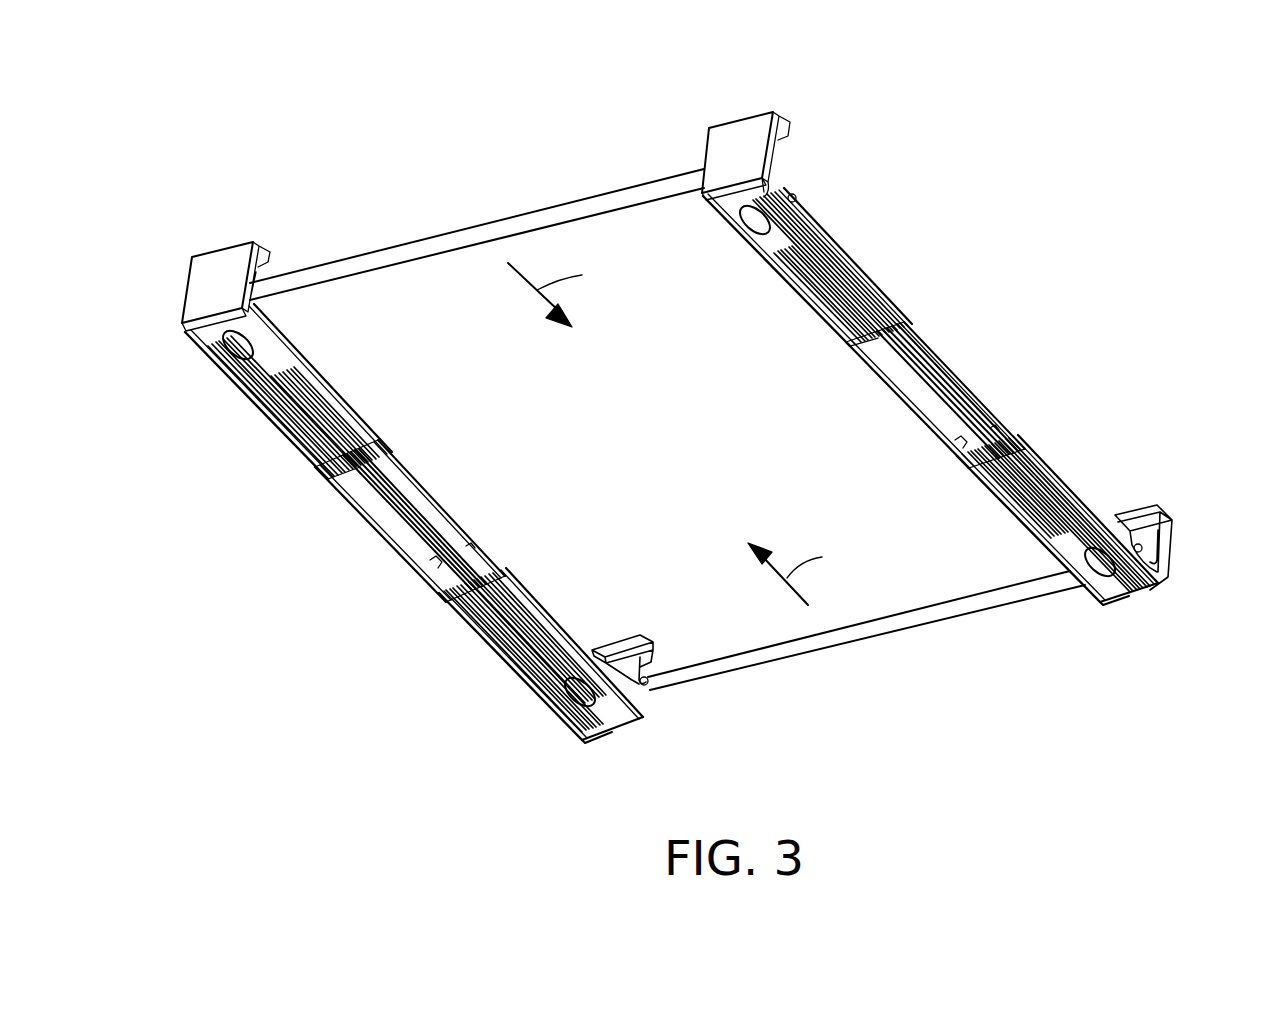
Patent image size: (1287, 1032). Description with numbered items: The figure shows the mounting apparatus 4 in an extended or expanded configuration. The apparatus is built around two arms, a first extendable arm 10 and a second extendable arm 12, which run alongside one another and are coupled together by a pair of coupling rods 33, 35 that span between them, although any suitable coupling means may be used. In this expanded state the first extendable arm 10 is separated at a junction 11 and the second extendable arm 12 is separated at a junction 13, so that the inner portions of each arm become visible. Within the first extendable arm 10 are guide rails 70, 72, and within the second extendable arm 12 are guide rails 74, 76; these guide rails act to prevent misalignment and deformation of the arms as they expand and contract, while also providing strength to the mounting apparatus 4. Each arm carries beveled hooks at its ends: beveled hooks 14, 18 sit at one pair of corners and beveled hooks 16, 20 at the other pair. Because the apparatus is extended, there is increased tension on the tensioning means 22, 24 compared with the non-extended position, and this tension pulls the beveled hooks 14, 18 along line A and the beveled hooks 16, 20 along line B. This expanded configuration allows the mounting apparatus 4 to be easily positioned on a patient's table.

The mounting apparatus 4 is at (408, 190).
The first extendable arm 10 is at (840, 240).
The junction 11 is at (930, 396).
The second extendable arm 12 is at (317, 368).
The junction 13 is at (414, 523).
The beveled hook 14 is at (743, 118).
The beveled hook 16 is at (1173, 550).
The beveled hook 18 is at (213, 250).
The beveled hook 20 is at (613, 727).
The tensioning means 22 is at (957, 390).
The tensioning means 24 is at (435, 550).
The coupling rod 33 is at (512, 213).
The coupling rod 35 is at (883, 637).
The guide rail 70 is at (937, 333).
The guide rail 72 is at (903, 398).
The guide rail 74 is at (467, 530).
The guide rail 76 is at (365, 510).